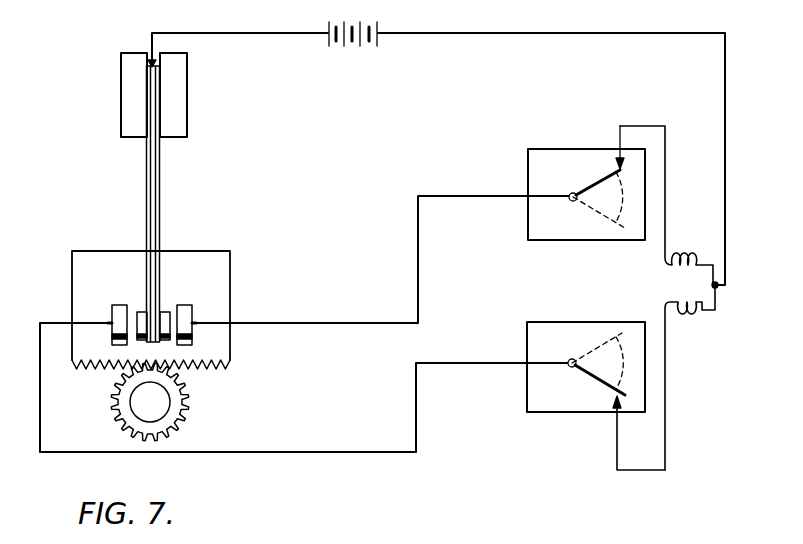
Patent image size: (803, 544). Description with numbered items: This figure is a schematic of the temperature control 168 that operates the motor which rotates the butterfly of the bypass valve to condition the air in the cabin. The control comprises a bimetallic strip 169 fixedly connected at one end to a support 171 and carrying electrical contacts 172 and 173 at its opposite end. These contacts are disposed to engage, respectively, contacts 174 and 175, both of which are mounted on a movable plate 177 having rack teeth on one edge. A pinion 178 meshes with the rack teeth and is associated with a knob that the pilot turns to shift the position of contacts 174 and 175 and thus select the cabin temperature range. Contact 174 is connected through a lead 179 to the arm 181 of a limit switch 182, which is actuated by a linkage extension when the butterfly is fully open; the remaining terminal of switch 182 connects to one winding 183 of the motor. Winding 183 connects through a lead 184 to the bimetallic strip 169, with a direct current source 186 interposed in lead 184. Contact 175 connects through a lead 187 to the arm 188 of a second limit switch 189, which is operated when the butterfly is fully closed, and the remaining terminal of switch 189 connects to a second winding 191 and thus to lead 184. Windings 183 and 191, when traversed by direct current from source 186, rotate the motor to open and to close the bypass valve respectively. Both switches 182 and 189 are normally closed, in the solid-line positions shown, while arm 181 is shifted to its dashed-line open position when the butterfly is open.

The control 168 is at (212, 232).
The bimetallic strip 169 is at (157, 163).
The support 171 is at (177, 98).
The electrical contact 172 is at (140, 312).
The electrical contact 173 is at (164, 312).
The contact 174 is at (117, 310).
The contact 175 is at (184, 310).
The movable plate 177 is at (230, 305).
The pinion 178 is at (116, 410).
The lead 179 is at (337, 452).
The arm 181 is at (611, 384).
The limit switch 182 is at (527, 390).
The winding 183 is at (692, 316).
The lead 184 is at (580, 33).
The direct current source 186 is at (355, 42).
The lead 187 is at (418, 268).
The arm 188 is at (622, 172).
The second limit switch 189 is at (528, 166).
The second winding 191 is at (686, 252).